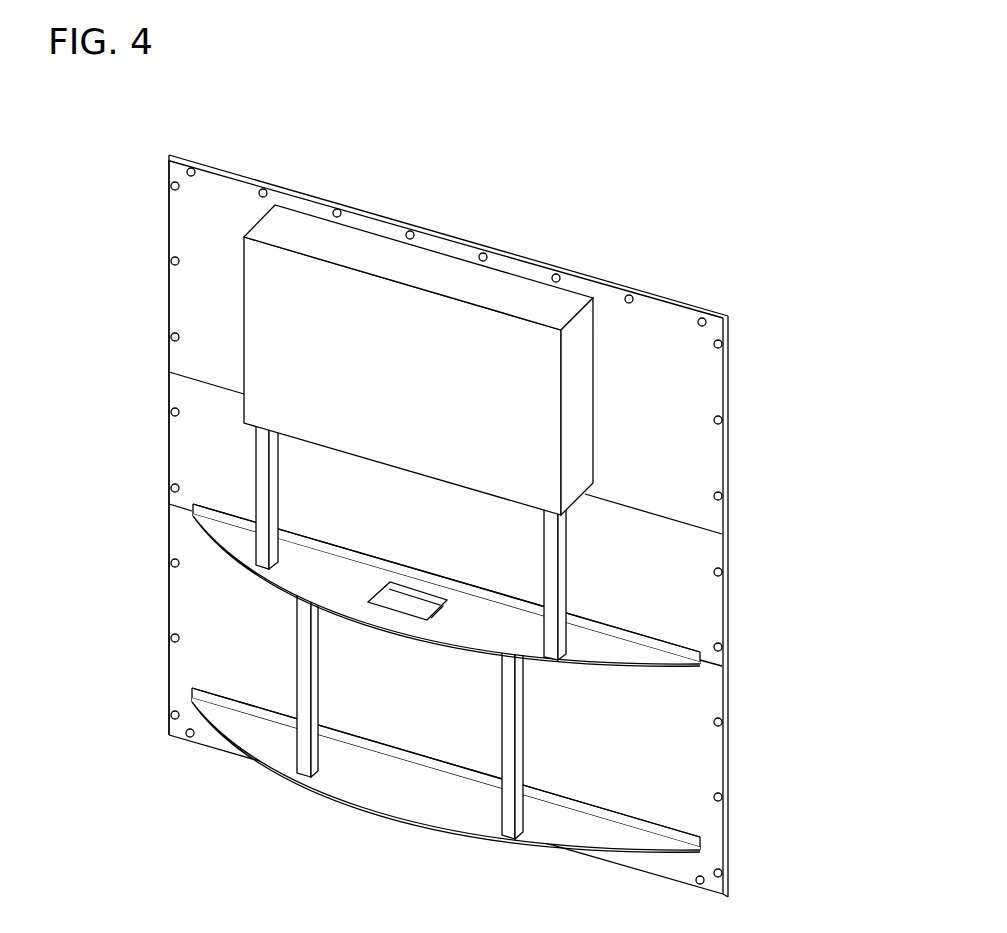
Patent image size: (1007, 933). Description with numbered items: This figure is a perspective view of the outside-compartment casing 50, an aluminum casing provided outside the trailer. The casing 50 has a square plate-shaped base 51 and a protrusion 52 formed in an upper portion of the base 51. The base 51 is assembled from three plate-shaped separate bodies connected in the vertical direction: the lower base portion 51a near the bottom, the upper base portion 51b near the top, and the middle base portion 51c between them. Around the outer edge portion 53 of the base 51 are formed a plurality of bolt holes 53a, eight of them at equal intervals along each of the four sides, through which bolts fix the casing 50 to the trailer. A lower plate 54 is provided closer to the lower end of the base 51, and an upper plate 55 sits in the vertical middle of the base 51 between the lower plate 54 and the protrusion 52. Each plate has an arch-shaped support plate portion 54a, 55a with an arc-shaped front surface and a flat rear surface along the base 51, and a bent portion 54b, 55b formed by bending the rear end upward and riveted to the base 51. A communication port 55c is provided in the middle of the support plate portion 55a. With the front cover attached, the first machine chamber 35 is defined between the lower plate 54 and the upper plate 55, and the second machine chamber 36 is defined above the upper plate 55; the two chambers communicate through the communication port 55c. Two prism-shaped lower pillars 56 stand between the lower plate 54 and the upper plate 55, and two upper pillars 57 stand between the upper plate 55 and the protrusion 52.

The outside-compartment casing 50 is at (677, 168).
The base 51 is at (166, 225).
The lower base portion 51a is at (183, 600).
The upper base portion 51b is at (183, 297).
The middle base portion 51c is at (183, 477).
The protrusion 52 is at (397, 320).
The outer edge portion 53 is at (183, 437).
The bolt holes 53a is at (175, 408).
The lower plate 54 is at (446, 800).
The support plate portion 54a is at (550, 838).
The bent portion 54b is at (453, 773).
The upper plate 55 is at (447, 624).
The support plate portion 55a is at (613, 654).
The bent portion 55b is at (472, 590).
The communication port 55c is at (408, 600).
The lower pillars 56 is at (302, 644).
The upper pillars 57 is at (260, 470).
The first machine chamber 35 is at (446, 745).
The second machine chamber 36 is at (504, 578).